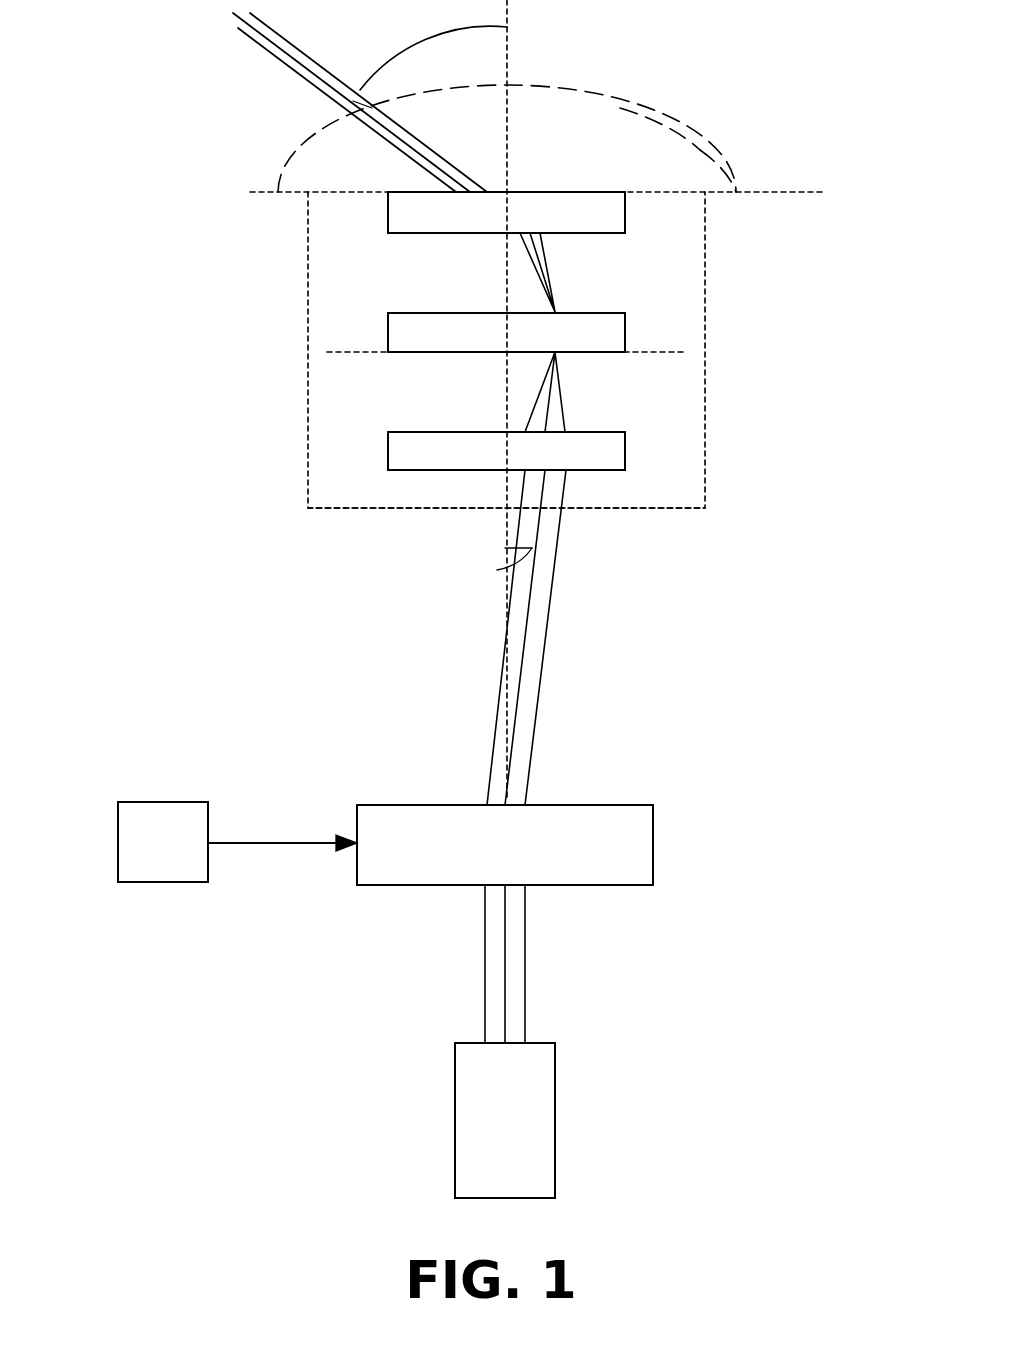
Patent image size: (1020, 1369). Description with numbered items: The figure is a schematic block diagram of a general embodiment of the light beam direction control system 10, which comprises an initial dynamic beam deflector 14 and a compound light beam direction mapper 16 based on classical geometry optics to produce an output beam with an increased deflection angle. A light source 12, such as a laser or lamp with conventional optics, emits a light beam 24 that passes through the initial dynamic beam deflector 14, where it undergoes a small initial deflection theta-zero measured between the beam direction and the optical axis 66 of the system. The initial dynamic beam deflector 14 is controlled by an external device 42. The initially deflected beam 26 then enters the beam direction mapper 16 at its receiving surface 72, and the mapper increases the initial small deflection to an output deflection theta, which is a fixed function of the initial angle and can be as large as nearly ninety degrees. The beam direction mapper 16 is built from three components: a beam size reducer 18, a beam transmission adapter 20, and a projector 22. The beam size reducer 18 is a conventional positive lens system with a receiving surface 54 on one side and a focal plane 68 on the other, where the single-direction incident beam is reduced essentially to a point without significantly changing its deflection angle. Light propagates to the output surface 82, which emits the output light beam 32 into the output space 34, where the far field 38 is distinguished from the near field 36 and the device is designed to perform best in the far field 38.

The light beam direction control system 10 is at (220, 462).
The light source 12 is at (555, 1120).
The initial dynamic beam deflector 14 is at (653, 845).
The compound light beam direction mapper 16 is at (705, 333).
The beam size reducer 18 is at (625, 450).
The beam transmission adapter 20 is at (625, 333).
The projector 22 is at (625, 214).
The light beam 24 is at (525, 983).
The initially deflected beam 26 is at (543, 648).
The output light beam 32 is at (274, 50).
The output space 34 is at (671, 143).
The near field 36 is at (641, 175).
The far field 38 is at (699, 110).
The external device 42 is at (118, 843).
The receiving surface 54 is at (467, 470).
The optical axis 66 is at (507, 55).
The focal plane 68 is at (359, 351).
The receiving surface 72 is at (388, 508).
The output surface 82 is at (400, 192).